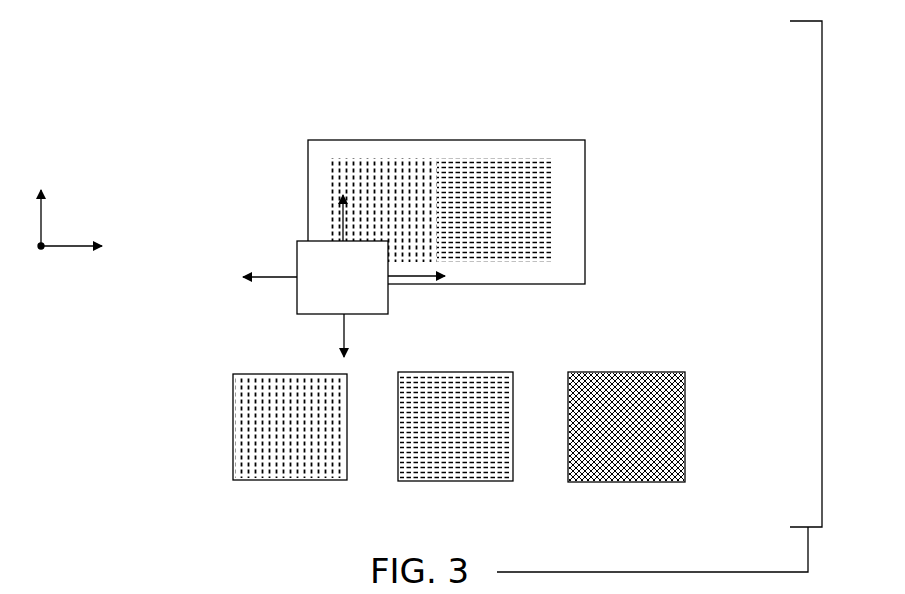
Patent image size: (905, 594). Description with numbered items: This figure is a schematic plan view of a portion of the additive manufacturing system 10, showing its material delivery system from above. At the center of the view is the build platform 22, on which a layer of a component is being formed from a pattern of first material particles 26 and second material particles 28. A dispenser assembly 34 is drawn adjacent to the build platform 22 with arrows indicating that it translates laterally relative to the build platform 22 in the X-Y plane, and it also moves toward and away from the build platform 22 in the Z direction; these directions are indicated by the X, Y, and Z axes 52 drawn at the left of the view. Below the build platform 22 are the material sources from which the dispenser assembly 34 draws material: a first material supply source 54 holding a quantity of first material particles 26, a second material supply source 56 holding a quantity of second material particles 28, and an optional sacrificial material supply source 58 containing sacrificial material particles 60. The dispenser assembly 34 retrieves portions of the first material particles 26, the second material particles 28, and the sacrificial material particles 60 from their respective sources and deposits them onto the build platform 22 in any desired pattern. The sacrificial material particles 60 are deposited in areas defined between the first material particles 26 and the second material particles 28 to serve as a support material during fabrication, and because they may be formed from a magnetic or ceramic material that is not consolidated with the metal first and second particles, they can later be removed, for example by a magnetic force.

The additive manufacturing system 10 is at (275, 82).
The build platform 22 is at (543, 140).
The first material particles 26 is at (550, 215).
The second material particles 28 is at (385, 160).
The dispenser assembly 34 is at (280, 301).
The X, Y, and Z axes 52 is at (88, 200).
The first material supply source 54 is at (495, 372).
The second material supply source 56 is at (232, 425).
The sacrificial material supply source 58 is at (685, 395).
The sacrificial material particles 60 is at (630, 378).